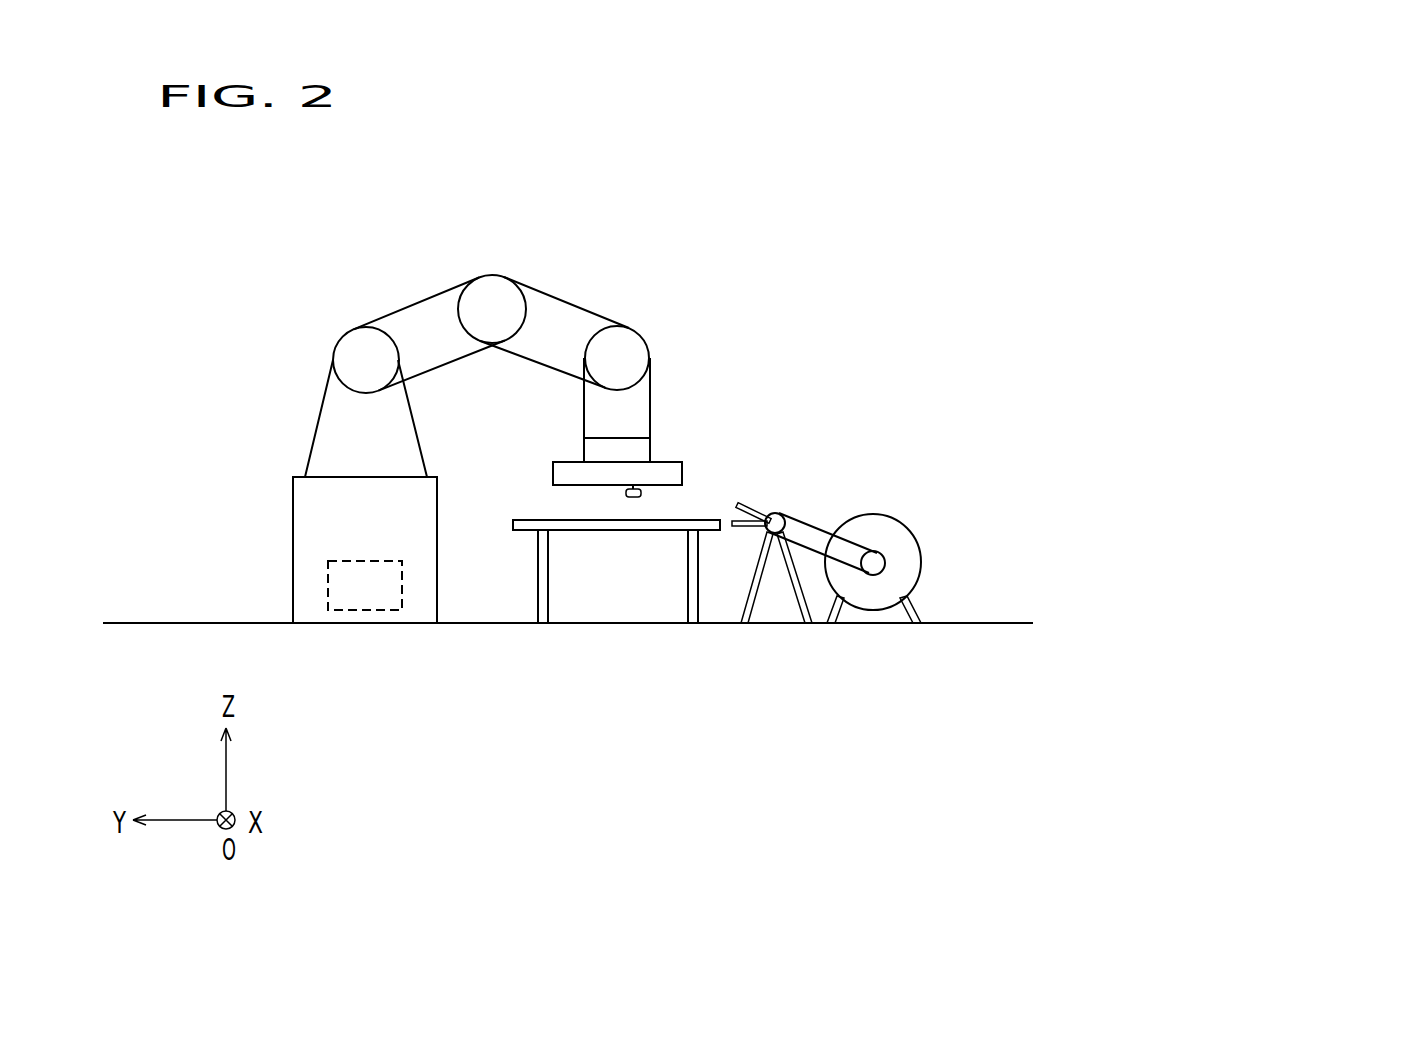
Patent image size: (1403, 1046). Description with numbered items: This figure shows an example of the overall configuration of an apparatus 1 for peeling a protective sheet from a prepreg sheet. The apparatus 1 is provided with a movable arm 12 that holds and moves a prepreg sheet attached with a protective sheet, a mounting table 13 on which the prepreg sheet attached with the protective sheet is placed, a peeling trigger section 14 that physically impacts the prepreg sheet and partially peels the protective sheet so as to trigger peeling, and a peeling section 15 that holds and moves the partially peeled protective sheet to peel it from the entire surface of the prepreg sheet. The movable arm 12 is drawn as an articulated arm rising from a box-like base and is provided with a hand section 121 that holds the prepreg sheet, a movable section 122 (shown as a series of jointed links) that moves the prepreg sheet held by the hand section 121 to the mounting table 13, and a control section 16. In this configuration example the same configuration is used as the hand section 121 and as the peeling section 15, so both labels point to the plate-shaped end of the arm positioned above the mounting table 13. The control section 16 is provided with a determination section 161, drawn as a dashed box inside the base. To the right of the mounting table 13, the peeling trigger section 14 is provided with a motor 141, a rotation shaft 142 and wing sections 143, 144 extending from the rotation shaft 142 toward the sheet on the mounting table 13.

The apparatus for peeling protective sheet from prepreg sheet 1 is at (827, 206).
The movable arm 12 is at (320, 435).
The movable section 122 is at (350, 327).
The hand section 121 is at (680, 463).
The peeling section 15 is at (730, 424).
The control section 16 is at (302, 535).
The determination section 161 is at (360, 608).
The mounting table 13 is at (618, 531).
The peeling trigger section 14 is at (1130, 403).
The motor 141 is at (897, 532).
The rotation shaft 142 is at (780, 512).
The wing section 143 is at (753, 500).
The wing section 144 is at (828, 544).